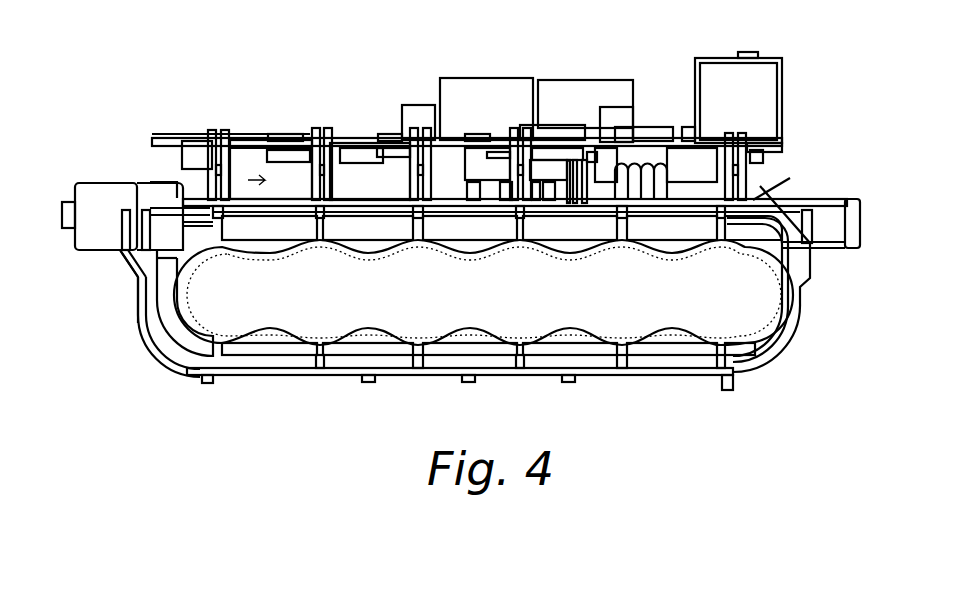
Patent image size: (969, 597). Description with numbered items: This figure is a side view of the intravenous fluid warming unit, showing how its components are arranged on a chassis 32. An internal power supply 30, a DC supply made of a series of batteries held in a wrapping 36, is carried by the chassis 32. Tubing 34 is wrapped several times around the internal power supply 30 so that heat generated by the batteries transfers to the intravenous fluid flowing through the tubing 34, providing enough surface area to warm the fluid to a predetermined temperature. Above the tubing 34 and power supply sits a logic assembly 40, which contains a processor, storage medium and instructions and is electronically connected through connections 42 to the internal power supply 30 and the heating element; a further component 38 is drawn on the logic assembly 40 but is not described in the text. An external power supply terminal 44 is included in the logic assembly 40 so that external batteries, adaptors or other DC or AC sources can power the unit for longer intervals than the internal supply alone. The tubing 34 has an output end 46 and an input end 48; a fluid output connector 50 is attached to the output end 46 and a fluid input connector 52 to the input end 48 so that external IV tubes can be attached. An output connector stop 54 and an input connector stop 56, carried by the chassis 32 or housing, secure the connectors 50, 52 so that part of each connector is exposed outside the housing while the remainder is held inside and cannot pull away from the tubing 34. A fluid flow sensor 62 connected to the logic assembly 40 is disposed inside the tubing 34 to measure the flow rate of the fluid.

The internal power supply 30 is at (735, 307).
The chassis 32 is at (290, 362).
The tubing 34 is at (780, 178).
The wrapping 36 is at (160, 297).
The circuit board component 38 is at (380, 0).
The logic assembly 40 is at (267, 135).
The connections 42 is at (662, 132).
The external power supply terminal 44 is at (763, 80).
The output end 46 is at (137, 145).
The input end 48 is at (826, 180).
The fluid output connector 50 is at (90, 182).
The fluid input connector 52 is at (840, 200).
The output connector stop 54 is at (120, 245).
The input connector stop 56 is at (805, 213).
The fluid flow sensor 62 is at (182, 182).